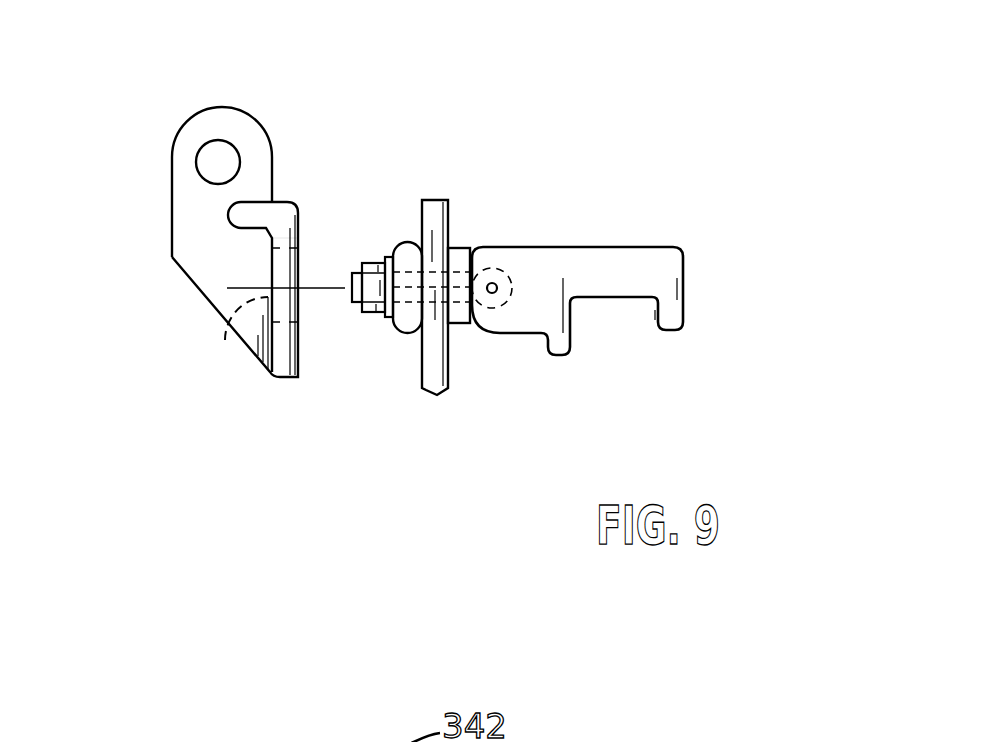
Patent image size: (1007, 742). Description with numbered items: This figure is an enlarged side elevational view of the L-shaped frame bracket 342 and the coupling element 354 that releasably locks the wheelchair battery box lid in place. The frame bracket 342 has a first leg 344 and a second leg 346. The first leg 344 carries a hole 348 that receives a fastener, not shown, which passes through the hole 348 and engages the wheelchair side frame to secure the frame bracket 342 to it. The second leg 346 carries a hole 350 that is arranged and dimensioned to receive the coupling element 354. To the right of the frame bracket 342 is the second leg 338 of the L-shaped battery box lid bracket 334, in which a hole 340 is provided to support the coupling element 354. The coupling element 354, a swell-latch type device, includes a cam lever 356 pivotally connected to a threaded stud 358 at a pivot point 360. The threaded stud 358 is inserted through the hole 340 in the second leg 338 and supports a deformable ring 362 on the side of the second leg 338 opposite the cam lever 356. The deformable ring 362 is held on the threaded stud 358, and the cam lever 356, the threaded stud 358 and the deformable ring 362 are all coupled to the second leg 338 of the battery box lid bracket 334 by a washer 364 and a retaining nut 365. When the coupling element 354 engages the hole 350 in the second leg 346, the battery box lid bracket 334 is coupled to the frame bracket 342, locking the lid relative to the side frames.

The battery box lid bracket 334 is at (490, 95).
The second leg 338 is at (435, 200).
The hole 340 is at (452, 247).
The frame bracket 342 is at (300, 103).
The first leg 344 is at (198, 123).
The second leg 346 is at (267, 242).
The hole 348 is at (213, 158).
The hole 350 is at (225, 340).
The coupling element 354 is at (742, 165).
The cam lever 356 is at (665, 283).
The threaded stud 358 is at (345, 302).
The pivot point 360 is at (497, 287).
The deformable ring 362 is at (407, 240).
The washer 364 is at (390, 318).
The retaining nut 365 is at (373, 313).